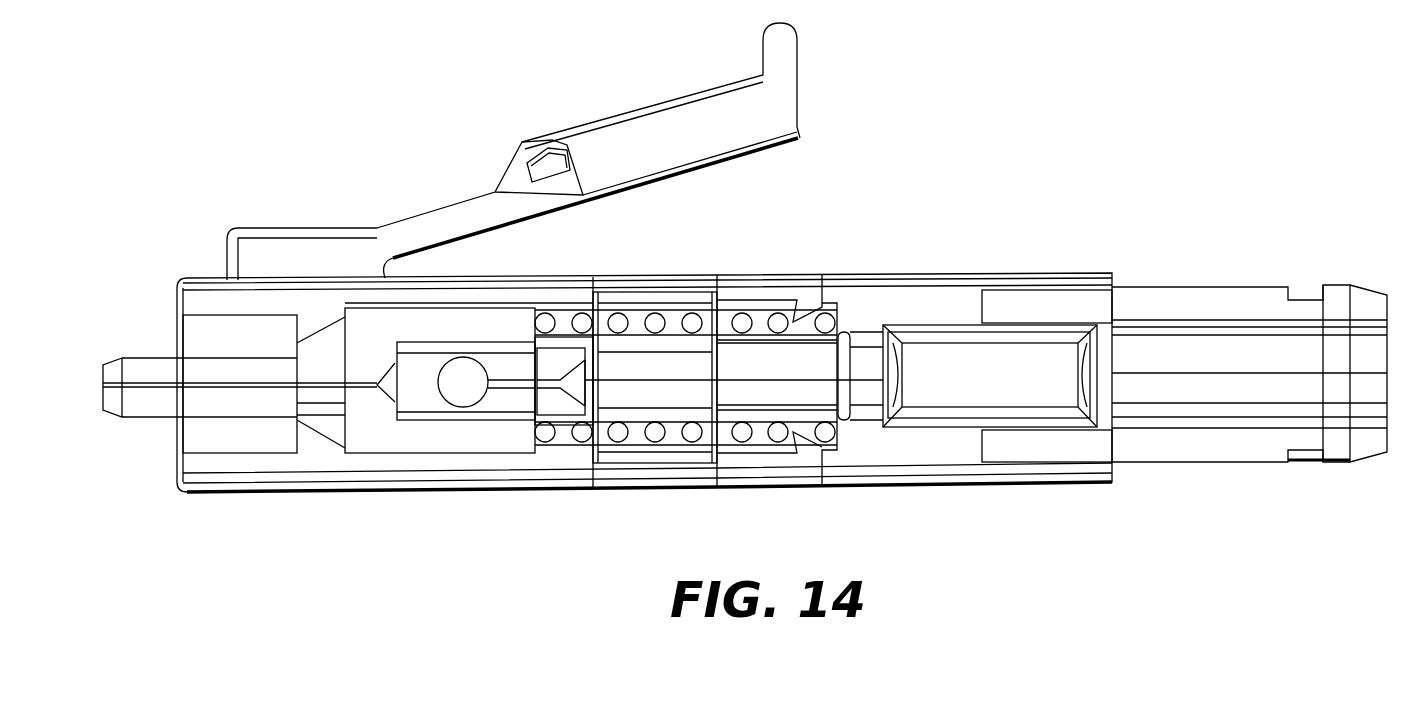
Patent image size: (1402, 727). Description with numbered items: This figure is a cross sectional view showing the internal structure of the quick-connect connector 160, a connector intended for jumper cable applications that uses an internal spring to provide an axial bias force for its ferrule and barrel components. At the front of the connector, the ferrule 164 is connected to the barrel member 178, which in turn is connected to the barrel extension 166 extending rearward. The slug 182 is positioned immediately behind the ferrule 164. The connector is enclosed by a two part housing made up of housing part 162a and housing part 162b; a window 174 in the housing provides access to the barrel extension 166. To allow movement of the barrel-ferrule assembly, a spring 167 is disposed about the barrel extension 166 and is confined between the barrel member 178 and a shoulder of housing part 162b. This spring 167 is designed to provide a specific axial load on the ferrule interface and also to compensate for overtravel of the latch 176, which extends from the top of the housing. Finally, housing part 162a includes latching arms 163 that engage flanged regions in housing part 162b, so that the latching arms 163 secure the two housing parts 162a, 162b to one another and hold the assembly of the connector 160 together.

The quick-connect connector 160 is at (1040, 136).
The housing part 162a is at (517, 288).
The housing part 162b is at (880, 296).
The latching arms 163 is at (682, 292).
The ferrule 164 is at (146, 373).
The barrel extension 166 is at (755, 380).
The spring 167 is at (741, 322).
The window 174 is at (1025, 372).
The latch 176 is at (673, 133).
The barrel member 178 is at (387, 433).
The slug 182 is at (505, 400).